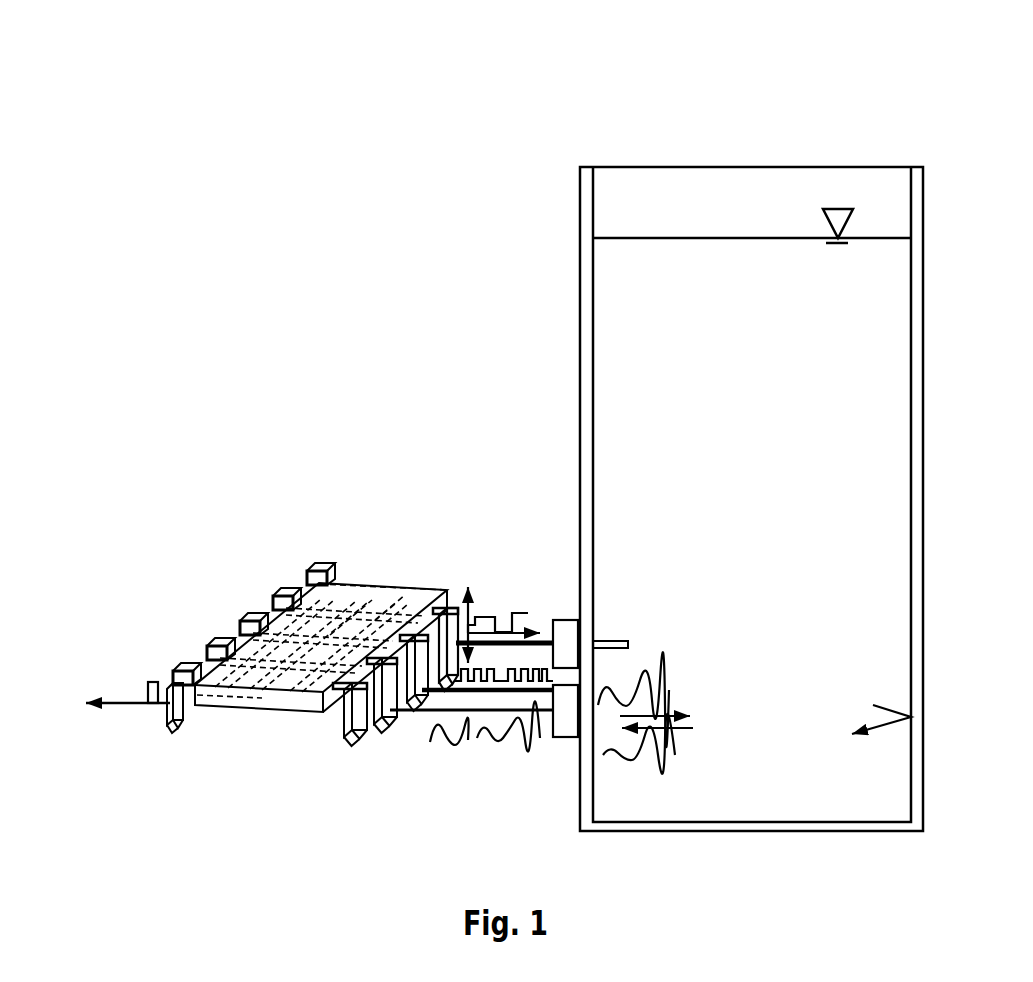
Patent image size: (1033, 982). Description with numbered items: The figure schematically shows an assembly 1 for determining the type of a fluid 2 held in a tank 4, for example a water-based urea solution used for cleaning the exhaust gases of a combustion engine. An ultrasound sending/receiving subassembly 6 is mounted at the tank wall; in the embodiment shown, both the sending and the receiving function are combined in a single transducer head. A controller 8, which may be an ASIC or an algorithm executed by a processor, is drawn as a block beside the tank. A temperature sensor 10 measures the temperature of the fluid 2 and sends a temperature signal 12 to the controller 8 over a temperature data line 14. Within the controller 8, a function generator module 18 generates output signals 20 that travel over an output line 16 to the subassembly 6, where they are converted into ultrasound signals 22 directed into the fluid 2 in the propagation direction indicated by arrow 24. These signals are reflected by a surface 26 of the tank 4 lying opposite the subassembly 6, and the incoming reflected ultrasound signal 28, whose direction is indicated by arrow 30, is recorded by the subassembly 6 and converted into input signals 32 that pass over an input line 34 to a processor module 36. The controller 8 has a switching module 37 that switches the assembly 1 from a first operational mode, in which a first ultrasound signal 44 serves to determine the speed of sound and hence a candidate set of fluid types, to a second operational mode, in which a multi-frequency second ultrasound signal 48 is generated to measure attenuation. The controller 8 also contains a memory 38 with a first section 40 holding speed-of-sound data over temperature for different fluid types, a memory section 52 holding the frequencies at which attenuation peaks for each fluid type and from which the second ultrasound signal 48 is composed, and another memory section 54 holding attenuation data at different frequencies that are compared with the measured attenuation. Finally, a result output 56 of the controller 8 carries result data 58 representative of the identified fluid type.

The assembly 1 is at (271, 50).
The fluid 2 is at (705, 318).
The tank 4 is at (580, 210).
The ultrasound sending/receiving subassembly 6 is at (565, 734).
The controller 8 is at (301, 497).
The temperature sensor 10 is at (570, 630).
The temperature signal 12 is at (484, 616).
The temperature data line 14 is at (478, 608).
The output line 16 is at (420, 708).
The function generator module 18 is at (372, 628).
The output signals 20 is at (441, 603).
The ultrasound signals 22 is at (666, 646).
The first ultrasound signal 44 is at (610, 644).
The second ultrasound signal 48 is at (610, 644).
The arrow 24 is at (668, 710).
The surface 26 is at (906, 690).
The reflected ultrasound signal 28 is at (672, 745).
The arrow 30 is at (672, 722).
The input signals 32 is at (466, 750).
The input line 34 is at (434, 712).
The processor module 36 is at (332, 660).
The switching module 37 is at (400, 600).
The memory 38 is at (307, 618).
The first section of the memory 40 is at (240, 668).
The memory section 52 is at (282, 635).
The another memory section 54 is at (312, 598).
The result output 56 is at (120, 700).
The result data 58 is at (147, 692).